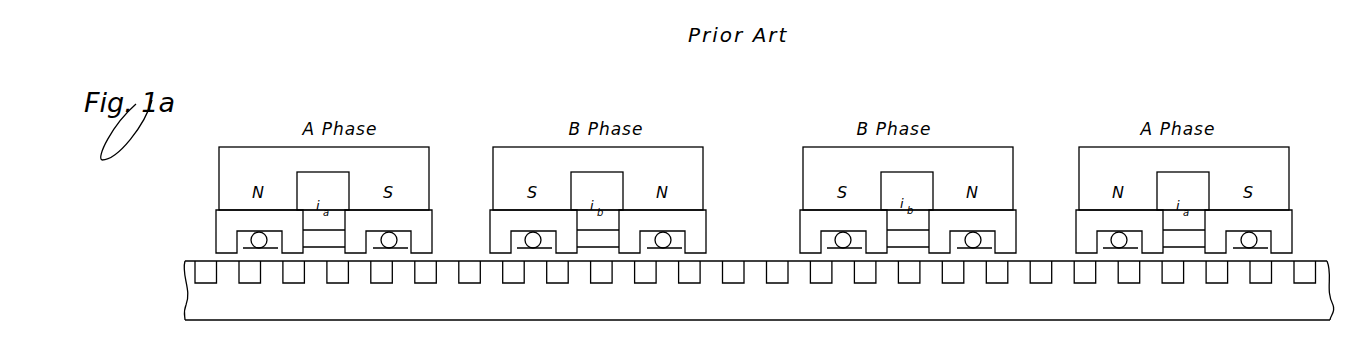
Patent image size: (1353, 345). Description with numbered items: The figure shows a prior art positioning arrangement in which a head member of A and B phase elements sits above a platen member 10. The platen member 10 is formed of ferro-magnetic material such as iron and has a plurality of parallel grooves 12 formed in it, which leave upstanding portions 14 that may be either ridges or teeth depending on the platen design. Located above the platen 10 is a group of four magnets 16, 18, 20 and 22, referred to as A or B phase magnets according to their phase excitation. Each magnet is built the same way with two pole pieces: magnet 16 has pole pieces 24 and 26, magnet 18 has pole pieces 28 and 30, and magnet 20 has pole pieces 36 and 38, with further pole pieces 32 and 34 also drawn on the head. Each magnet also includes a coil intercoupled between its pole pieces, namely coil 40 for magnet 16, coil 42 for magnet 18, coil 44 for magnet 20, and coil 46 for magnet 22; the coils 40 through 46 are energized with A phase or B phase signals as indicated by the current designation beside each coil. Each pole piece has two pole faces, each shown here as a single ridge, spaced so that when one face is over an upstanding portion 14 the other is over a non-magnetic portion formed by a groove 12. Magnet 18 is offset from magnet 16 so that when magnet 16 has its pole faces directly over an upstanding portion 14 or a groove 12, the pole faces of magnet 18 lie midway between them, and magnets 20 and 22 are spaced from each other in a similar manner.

The platen member 10 is at (213, 301).
The parallel grooves 12 is at (245, 273).
The upstanding portions 14 is at (484, 273).
The magnet 16 is at (398, 160).
The magnet 18 is at (674, 160).
The magnet 20 is at (991, 152).
The magnet 22 is at (1273, 150).
The pole piece 24 is at (228, 217).
The pole piece 26 is at (427, 218).
The pole piece 28 is at (497, 220).
The pole piece 30 is at (706, 218).
The pole piece 32 is at (805, 218).
The pole piece 34 is at (1013, 215).
The pole piece 36 is at (1082, 218).
The pole piece 38 is at (1283, 213).
The coil 40 is at (306, 232).
The coil 42 is at (580, 232).
The coil 44 is at (893, 232).
The coil 46 is at (1166, 232).